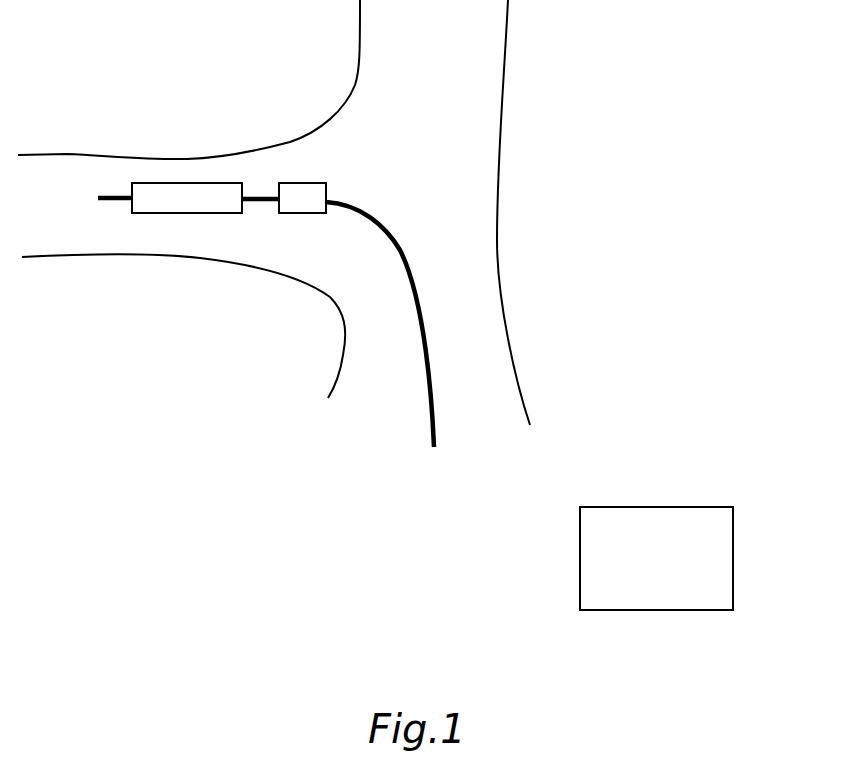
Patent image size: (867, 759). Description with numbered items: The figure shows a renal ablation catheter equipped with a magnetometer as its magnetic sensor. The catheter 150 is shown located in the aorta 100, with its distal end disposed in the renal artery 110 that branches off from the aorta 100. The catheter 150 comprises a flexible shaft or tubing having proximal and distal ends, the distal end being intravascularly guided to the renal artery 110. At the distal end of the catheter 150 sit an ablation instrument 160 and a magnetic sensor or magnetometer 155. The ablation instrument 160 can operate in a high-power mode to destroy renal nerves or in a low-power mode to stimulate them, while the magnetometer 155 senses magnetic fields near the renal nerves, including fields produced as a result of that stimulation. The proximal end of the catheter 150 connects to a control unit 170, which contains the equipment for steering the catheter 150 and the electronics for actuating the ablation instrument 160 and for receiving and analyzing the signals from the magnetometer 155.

The aorta 100 is at (547, 107).
The renal artery 110 is at (105, 140).
The catheter 150 is at (408, 258).
The magnetometer 155 is at (318, 183).
The ablation instrument 160 is at (178, 213).
The control unit 170 is at (733, 507).